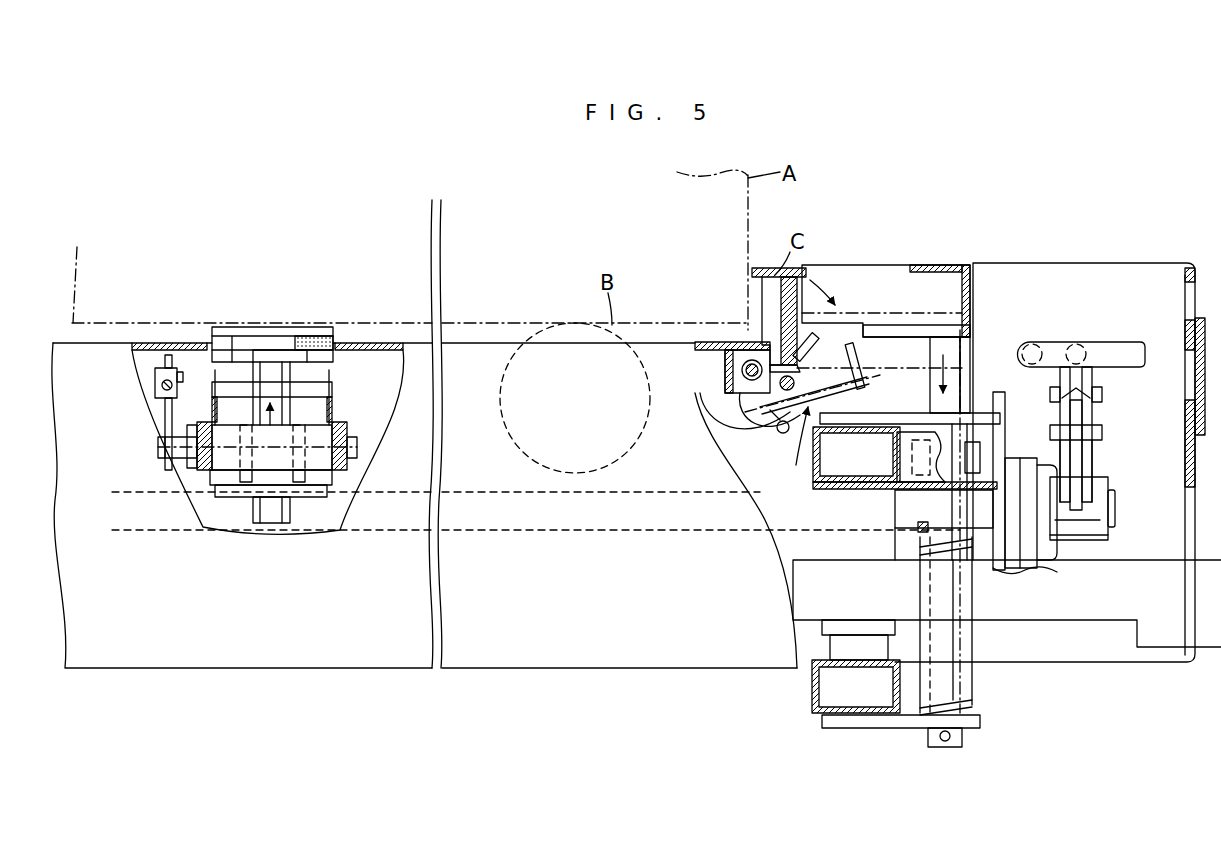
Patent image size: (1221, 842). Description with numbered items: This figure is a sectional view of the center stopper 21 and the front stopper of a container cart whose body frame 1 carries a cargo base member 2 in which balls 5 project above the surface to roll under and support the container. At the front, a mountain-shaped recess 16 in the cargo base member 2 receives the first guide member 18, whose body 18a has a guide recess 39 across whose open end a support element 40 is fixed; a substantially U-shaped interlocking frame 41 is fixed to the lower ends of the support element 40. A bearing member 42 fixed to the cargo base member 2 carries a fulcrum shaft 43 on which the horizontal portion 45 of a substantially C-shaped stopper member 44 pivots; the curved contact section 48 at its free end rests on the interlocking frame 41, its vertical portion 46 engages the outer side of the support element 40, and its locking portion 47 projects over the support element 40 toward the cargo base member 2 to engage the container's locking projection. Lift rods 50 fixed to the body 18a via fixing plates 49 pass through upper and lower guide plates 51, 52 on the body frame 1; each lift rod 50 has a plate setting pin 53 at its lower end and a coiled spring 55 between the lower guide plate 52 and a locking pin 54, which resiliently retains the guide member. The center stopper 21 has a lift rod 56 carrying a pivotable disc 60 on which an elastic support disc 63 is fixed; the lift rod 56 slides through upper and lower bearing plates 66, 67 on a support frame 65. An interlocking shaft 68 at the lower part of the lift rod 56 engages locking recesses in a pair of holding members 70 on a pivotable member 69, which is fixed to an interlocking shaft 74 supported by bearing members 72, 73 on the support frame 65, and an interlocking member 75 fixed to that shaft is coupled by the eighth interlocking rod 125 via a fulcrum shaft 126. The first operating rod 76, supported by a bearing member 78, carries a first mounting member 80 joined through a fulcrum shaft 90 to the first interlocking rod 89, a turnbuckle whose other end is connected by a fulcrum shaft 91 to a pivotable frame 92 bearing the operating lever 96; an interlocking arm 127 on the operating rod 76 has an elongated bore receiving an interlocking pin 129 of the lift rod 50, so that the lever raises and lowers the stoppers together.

The body frame 1 is at (473, 657).
The cargo base member 2 is at (420, 345).
The balls 5 is at (573, 350).
The mountain-shaped recess 16 is at (768, 350).
The first guide member 18 is at (883, 262).
The guide member body 18a is at (937, 265).
The center stopper 21 is at (322, 340).
The guide recess 39 is at (845, 283).
The support element 40 is at (775, 300).
The interlocking frame 41 is at (760, 403).
The bearing member 42 is at (725, 360).
The fulcrum shaft 43 is at (735, 380).
The stopper member 44 is at (770, 264).
The horizontal portion 45 is at (740, 395).
The vertical portion 46 is at (785, 330).
The locking portion 47 is at (757, 266).
The curved contact section 48 is at (820, 350).
The fixing plate 49 is at (938, 330).
The lift rod 50 is at (948, 352).
The upper guide plate 51 is at (948, 415).
The lower guide plate 52 is at (905, 728).
The plate setting pin 53 is at (945, 742).
The locking pin 54 is at (920, 527).
The coiled spring 55 is at (935, 600).
The lift rod 56 is at (250, 370).
The pivotable disc 60 is at (225, 350).
The elastic support disc 63 is at (278, 323).
The support frame 65 is at (332, 410).
The upper bearing plate 66 is at (330, 388).
The lower bearing plate 67 is at (320, 485).
The interlocking shaft 68 is at (268, 485).
The pivotable member 69 is at (205, 470).
The holding members 70 is at (242, 482).
The bearing member 72 is at (192, 455).
The bearing member 73 is at (357, 448).
The interlocking shaft 74 is at (160, 447).
The interlocking member 75 is at (165, 428).
The first operating rod 76 is at (1118, 507).
The bearing member 78 is at (1030, 520).
The first mounting member 80 is at (1090, 470).
The first interlocking rod 89 is at (1078, 418).
The fulcrum shaft 90 is at (1102, 431).
The fulcrum shaft 91 is at (1055, 392).
The pivotable frame 92 is at (1092, 375).
The operating lever 96 is at (1103, 345).
The eighth interlocking rod 125 is at (162, 386).
The fulcrum shaft 126 is at (155, 372).
The interlocking arm 127 is at (978, 435).
The interlocking pin 129 is at (983, 465).